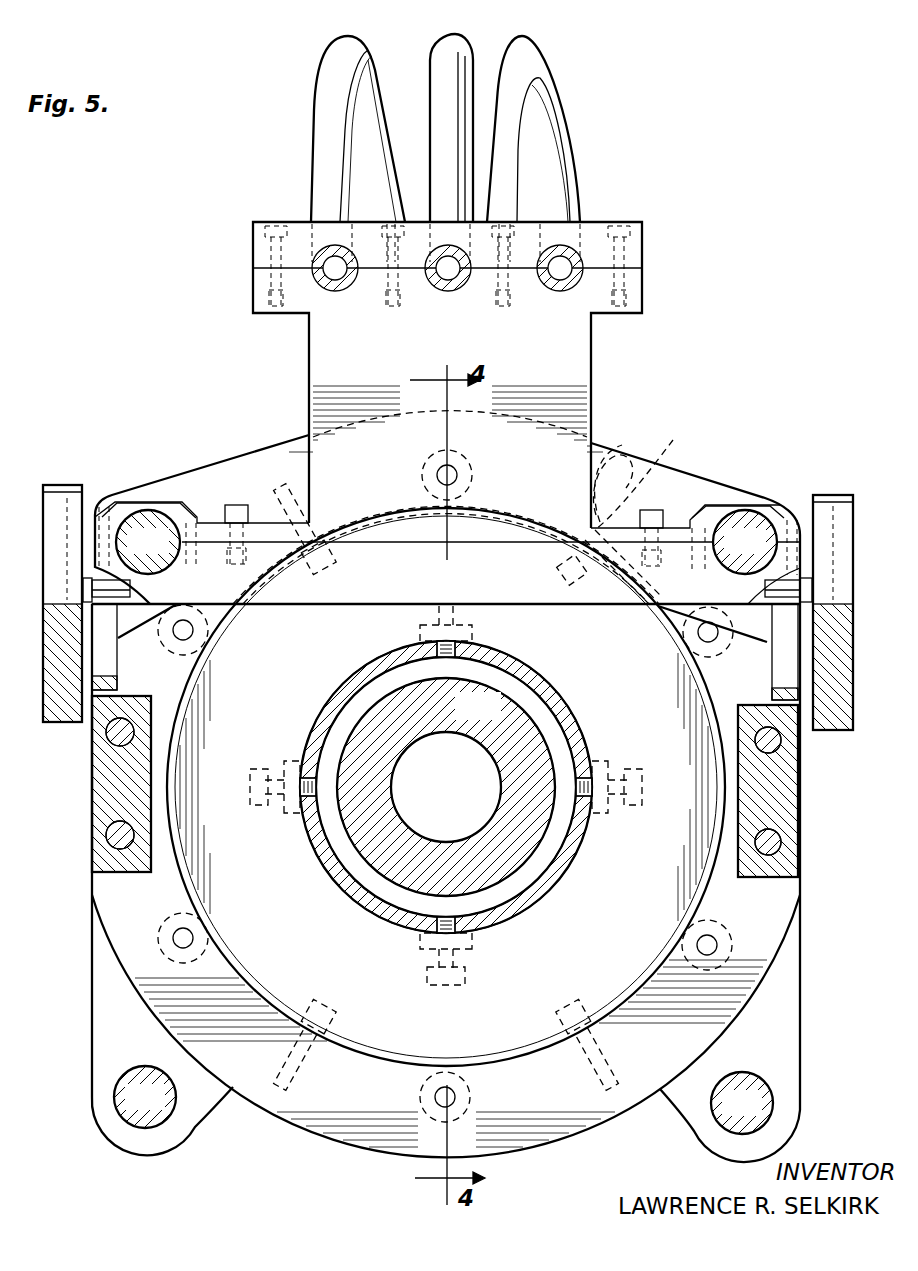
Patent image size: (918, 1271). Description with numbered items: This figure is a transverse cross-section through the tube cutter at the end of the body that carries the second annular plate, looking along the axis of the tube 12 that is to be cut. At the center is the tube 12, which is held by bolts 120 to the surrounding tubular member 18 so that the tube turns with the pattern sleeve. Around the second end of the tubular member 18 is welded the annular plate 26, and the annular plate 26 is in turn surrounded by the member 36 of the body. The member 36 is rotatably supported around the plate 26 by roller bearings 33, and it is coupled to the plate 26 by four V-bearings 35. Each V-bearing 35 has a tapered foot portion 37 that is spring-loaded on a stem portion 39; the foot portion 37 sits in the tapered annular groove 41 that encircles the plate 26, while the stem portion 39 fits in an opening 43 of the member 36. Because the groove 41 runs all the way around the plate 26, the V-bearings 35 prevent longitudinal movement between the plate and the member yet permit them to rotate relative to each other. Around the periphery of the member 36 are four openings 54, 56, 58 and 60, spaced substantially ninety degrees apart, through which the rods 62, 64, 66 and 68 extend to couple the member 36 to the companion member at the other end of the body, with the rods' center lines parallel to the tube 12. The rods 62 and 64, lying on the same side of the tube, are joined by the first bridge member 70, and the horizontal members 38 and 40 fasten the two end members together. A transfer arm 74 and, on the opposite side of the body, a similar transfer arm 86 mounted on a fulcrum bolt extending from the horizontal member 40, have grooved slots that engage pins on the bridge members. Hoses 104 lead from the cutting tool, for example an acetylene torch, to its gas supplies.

The tube 12 is at (458, 736).
The tubular member 18 is at (340, 686).
The annular plate 26 is at (486, 538).
The roller bearings 33 is at (465, 470).
The V-bearings 35 is at (312, 521).
The member 36 is at (208, 478).
The tapered foot portion 37 is at (583, 585).
The horizontal member 38 is at (100, 780).
The stem portion 39 is at (645, 473).
The horizontal member 40 is at (792, 792).
The tapered annular groove 41 is at (560, 568).
The opening 43 is at (628, 460).
The opening 54 is at (138, 508).
The opening 56 is at (745, 512).
The opening 58 is at (712, 1114).
The opening 60 is at (152, 1128).
The rod 62 is at (166, 556).
The rod 64 is at (763, 556).
The rod 66 is at (759, 1117).
The rod 68 is at (162, 1111).
The first bridge member 70 is at (366, 369).
The transfer arm 74 is at (63, 487).
The transfer arm 86 is at (832, 497).
The hoses 104 is at (440, 100).
The bolts 120 is at (262, 775).